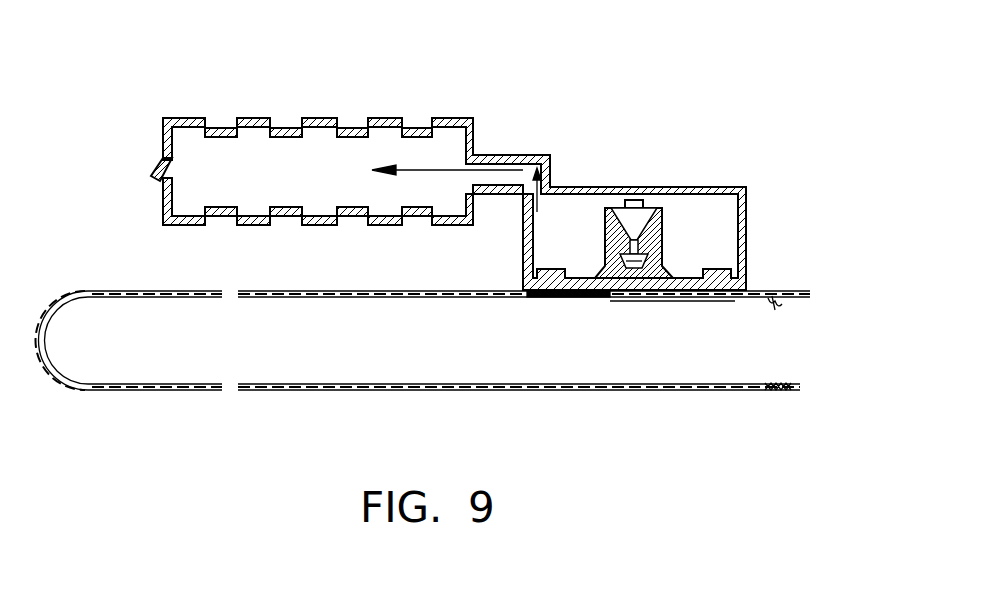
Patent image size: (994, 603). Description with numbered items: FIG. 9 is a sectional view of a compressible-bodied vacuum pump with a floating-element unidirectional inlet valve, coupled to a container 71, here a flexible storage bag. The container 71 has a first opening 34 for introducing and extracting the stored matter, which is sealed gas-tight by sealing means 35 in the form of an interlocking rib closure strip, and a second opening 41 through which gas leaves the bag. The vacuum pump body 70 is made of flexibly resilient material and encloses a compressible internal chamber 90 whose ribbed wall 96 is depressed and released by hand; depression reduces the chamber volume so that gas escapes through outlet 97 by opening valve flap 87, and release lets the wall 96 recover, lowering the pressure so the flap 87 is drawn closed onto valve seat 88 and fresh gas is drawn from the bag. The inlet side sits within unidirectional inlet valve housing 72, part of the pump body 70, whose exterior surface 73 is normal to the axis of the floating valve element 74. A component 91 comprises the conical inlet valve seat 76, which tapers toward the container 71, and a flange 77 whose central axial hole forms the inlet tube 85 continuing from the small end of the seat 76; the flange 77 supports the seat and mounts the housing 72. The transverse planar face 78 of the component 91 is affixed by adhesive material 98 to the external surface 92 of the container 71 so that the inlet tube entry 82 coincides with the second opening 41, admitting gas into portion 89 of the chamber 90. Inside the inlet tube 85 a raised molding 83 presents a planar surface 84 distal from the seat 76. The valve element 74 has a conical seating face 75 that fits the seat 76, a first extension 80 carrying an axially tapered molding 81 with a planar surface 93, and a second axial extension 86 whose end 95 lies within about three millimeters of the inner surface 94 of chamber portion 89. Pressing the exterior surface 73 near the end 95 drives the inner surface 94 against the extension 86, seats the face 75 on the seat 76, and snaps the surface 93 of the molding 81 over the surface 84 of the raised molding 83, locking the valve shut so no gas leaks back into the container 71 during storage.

The first opening 34 is at (795, 388).
The sealing means 35 is at (782, 297).
The second opening 41 is at (614, 303).
The vacuum pump body 70 is at (323, 118).
The container 71 is at (282, 392).
The unidirectional inlet valve housing 72 is at (748, 217).
The exterior surface 73 is at (640, 200).
The unidirectional inlet valve element 74 is at (660, 205).
The conical seating face 75 is at (627, 202).
The inlet valve seat 76 is at (663, 222).
The flange 77 is at (713, 276).
The transverse planar face 78 is at (582, 296).
The first extension 80 is at (647, 250).
The axially tapered molding 81 is at (638, 302).
The inlet tube entry 82 is at (616, 303).
The raised molding 83 is at (652, 302).
The planar surface 84 is at (612, 297).
The inlet tube 85 is at (630, 240).
The second axial extension 86 is at (642, 200).
The valve flap 87 is at (156, 170).
The valve seat 88 is at (165, 187).
The portion of compressible internal chamber 89 is at (722, 210).
The compressible internal chamber 90 is at (353, 157).
The component 91 is at (730, 303).
The external surface 92 is at (522, 297).
The planar surface 93 is at (620, 248).
The inner surface 94 is at (632, 200).
The end 95 is at (638, 200).
The wall 96 is at (283, 128).
The outlet 97 is at (168, 166).
The adhesive material 98 is at (530, 291).